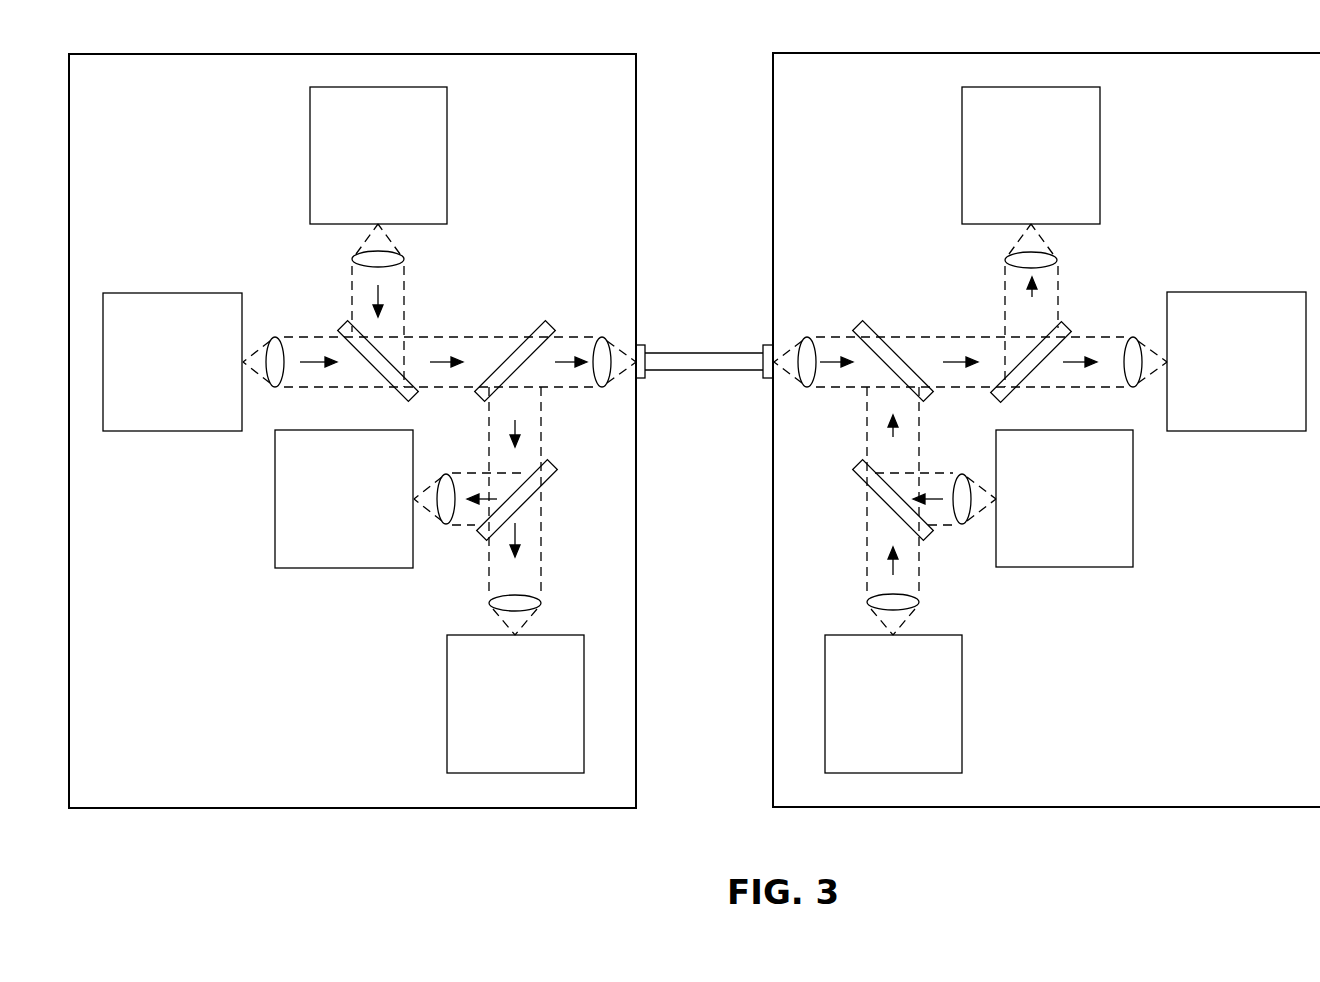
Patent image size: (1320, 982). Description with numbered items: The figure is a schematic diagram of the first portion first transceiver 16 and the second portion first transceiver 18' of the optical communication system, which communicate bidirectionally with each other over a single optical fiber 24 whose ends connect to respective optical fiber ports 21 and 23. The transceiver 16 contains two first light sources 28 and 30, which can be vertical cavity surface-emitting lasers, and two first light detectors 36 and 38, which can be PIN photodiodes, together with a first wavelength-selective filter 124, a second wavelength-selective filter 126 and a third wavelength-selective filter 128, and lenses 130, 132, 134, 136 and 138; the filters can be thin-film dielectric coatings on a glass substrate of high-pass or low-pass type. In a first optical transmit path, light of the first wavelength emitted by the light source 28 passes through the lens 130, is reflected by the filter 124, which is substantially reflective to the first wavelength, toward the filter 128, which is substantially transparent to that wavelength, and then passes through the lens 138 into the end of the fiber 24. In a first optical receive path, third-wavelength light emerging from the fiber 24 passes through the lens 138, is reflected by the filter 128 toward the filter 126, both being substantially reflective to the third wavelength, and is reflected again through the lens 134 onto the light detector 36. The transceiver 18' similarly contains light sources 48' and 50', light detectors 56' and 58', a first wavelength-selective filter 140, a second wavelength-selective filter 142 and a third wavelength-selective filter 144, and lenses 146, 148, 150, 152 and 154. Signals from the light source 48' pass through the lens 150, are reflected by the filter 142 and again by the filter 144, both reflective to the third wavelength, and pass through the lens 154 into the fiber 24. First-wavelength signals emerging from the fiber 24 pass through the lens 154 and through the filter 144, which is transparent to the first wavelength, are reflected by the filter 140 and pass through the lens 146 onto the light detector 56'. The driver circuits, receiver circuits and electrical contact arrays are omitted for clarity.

The first portion first transceiver 16 is at (308, 808).
The second portion first transceiver 18' is at (1046, 462).
The optical fiber port 21 is at (640, 378).
The optical fiber port 23 is at (767, 345).
The optical fiber 24 is at (688, 353).
The first light source 28 is at (310, 143).
The first light source 30 is at (172, 293).
The first light detector 36 is at (275, 517).
The first light detector 38 is at (447, 711).
The light source 48' is at (1095, 498).
The light source 50' is at (925, 704).
The light detector 56' is at (1061, 155).
The light detector 58' is at (1236, 338).
The first wavelength-selective filter 124 is at (343, 324).
The second wavelength-selective filter 126 is at (552, 464).
The third wavelength-selective filter 128 is at (551, 325).
The lens 130 is at (404, 259).
The lens 132 is at (275, 387).
The lens 134 is at (446, 525).
The lens 136 is at (541, 603).
The lens 138 is at (602, 387).
The first wavelength-selective filter 140 is at (1067, 323).
The second wavelength-selective filter 142 is at (857, 463).
The third wavelength-selective filter 144 is at (858, 323).
The lens 146 is at (1005, 259).
The lens 148 is at (1133, 387).
The lens 150 is at (962, 525).
The lens 152 is at (867, 603).
The lens 154 is at (807, 387).